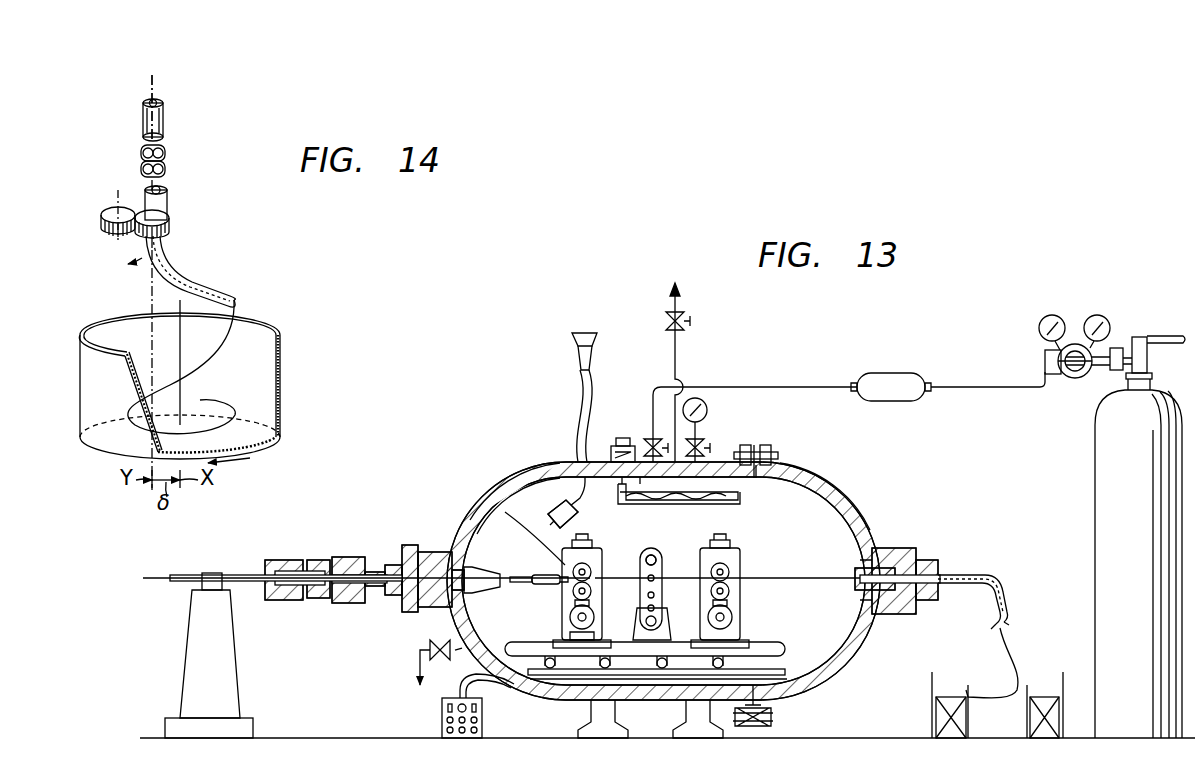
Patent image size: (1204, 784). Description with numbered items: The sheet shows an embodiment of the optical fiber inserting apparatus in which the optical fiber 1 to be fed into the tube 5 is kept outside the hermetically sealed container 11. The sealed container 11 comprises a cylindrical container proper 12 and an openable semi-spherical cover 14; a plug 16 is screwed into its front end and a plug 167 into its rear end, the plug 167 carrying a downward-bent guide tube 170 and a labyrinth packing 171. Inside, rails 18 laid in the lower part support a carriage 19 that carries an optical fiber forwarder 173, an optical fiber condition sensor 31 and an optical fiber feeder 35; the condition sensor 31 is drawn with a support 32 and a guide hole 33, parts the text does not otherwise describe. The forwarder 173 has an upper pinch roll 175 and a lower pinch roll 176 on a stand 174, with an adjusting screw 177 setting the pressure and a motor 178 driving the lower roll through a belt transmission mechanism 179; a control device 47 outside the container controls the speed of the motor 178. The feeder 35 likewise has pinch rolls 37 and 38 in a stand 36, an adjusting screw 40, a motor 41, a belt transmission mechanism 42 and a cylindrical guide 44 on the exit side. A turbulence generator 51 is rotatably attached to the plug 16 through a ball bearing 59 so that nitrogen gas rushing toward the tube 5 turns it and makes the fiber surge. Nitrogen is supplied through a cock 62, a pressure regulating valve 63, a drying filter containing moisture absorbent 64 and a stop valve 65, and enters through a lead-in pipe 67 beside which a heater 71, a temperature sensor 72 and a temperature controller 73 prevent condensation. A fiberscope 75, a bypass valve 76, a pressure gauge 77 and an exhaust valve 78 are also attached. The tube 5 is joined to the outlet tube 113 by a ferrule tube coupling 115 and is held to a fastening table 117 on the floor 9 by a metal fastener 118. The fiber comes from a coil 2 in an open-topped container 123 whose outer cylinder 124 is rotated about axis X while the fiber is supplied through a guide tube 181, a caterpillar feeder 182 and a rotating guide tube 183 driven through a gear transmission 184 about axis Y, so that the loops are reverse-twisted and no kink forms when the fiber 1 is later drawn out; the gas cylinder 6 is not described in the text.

In FIG. 14, the optical fiber 1 is at (155, 75).
In FIG. 13, the optical fiber 1 is at (148, 577).
In FIG. 13, the coil 2 is at (951, 738).
In FIG. 13, the tube 5 is at (176, 576).
In FIG. 13, the gas cylinder 6 is at (1178, 462).
In FIG. 13, the floor 9 is at (572, 762).
In FIG. 13, the hermetically sealed container 11 is at (546, 458).
In FIG. 13, the cylindrical container proper 12 is at (520, 480).
In FIG. 13, the semi-spherical cover 14 is at (818, 480).
In FIG. 13, the plug 16 is at (418, 552).
In FIG. 13, the rails 18 is at (678, 640).
In FIG. 13, the carriage 19 is at (770, 648).
In FIG. 13, the optical fiber condition sensor 31 is at (646, 545).
In FIG. 13, the support 32 is at (648, 640).
In FIG. 13, the guide hole 33 is at (654, 565).
In FIG. 13, the optical fiber feeder 35 is at (600, 545).
In FIG. 13, the stand 36 is at (560, 616).
In FIG. 13, the upper pinch roll 37 is at (578, 560).
In FIG. 13, the lower pinch roll 38 is at (570, 592).
In FIG. 13, the adjusting screw 40 is at (578, 528).
In FIG. 13, the motor 41 is at (586, 640).
In FIG. 13, the belt transmission mechanism 42 is at (586, 602).
In FIG. 13, the cylindrical guide 44 is at (545, 576).
In FIG. 13, the control device 47 is at (482, 708).
In FIG. 13, the turbulence generator 51 is at (504, 575).
In FIG. 13, the ball bearing 59 is at (482, 570).
In FIG. 13, the cock 62 is at (1138, 337).
In FIG. 13, the pressure regulating valve 63 is at (1063, 378).
In FIG. 13, the drying filter containing moisture absorbent 64 is at (892, 376).
In FIG. 13, the stop valve 65 is at (653, 432).
In FIG. 13, the lead-in pipe 67 is at (710, 470).
In FIG. 13, the heater 71 is at (710, 504).
In FIG. 13, the temperature sensor 72 is at (720, 491).
In FIG. 13, the temperature controller 73 is at (620, 444).
In FIG. 13, the fiberscope 75 is at (590, 400).
In FIG. 13, the bypass valve 76 is at (668, 306).
In FIG. 13, the pressure gauge 77 is at (708, 410).
In FIG. 13, the exhaust valve 78 is at (440, 663).
In FIG. 13, the outlet tube 113 is at (380, 566).
In FIG. 13, the ferrule tube coupling 115 is at (318, 556).
In FIG. 13, the fastening table 117 is at (228, 650).
In FIG. 13, the metal fastener 118 is at (214, 572).
In FIG. 14, the open-topped container 123 is at (292, 352).
In FIG. 13, the open-topped container 123 is at (927, 683).
In FIG. 14, the outer cylinder 124 is at (262, 316).
In FIG. 13, the outer cylinder 124 is at (930, 706).
In FIG. 13, the plug 167 is at (910, 548).
In FIG. 13, the guide tube 170 is at (965, 575).
In FIG. 13, the labyrinth packing 171 is at (866, 570).
In FIG. 13, the optical fiber forwarder 173 is at (746, 538).
In FIG. 13, the stand 174 is at (734, 562).
In FIG. 13, the upper pinch roll 175 is at (710, 570).
In FIG. 13, the lower pinch roll 176 is at (710, 590).
In FIG. 13, the adjusting screw 177 is at (720, 540).
In FIG. 13, the motor 178 is at (732, 615).
In FIG. 13, the belt transmission mechanism 179 is at (733, 602).
In FIG. 14, the guide tube 181 is at (160, 112).
In FIG. 14, the caterpillar feeder 182 is at (166, 152).
In FIG. 14, the rotating guide tube 183 is at (180, 262).
In FIG. 14, the gear transmission 184 is at (170, 206).